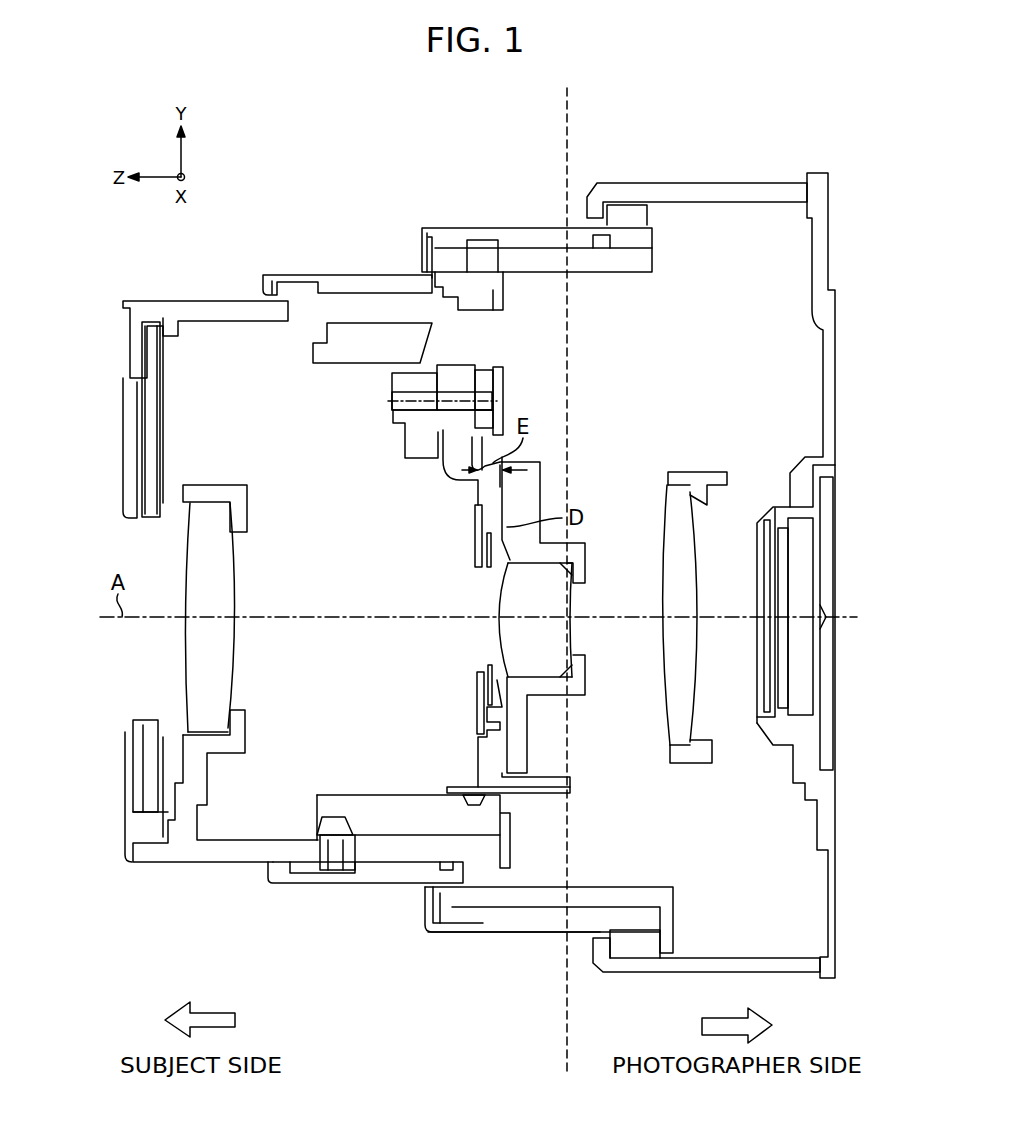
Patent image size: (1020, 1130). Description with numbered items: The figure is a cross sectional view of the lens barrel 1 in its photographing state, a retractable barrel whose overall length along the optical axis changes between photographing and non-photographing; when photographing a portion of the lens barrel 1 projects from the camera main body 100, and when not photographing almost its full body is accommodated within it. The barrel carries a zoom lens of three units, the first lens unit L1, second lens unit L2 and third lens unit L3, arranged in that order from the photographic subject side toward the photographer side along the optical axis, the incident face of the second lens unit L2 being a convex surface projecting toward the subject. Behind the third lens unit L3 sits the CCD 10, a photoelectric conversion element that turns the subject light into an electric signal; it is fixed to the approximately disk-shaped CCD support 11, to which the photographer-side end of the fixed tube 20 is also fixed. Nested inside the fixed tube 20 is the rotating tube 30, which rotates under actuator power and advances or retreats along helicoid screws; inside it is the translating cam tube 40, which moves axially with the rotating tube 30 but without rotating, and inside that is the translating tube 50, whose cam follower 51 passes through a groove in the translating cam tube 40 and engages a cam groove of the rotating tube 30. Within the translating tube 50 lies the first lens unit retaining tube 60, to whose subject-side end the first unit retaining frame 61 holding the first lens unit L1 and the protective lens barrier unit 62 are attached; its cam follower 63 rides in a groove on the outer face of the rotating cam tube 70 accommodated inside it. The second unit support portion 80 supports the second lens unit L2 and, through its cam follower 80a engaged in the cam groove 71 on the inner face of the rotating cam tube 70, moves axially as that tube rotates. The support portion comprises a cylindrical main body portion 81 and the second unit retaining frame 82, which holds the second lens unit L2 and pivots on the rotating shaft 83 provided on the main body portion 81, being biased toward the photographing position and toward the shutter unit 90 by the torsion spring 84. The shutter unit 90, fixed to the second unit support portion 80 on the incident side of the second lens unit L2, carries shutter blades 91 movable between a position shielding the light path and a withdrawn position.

The lens barrel 1 is at (638, 153).
The CCD 10 is at (805, 548).
The CCD support 11 is at (830, 385).
The fixed tube 20 is at (783, 182).
The rotating tube 30 is at (508, 236).
The translating cam tube 40 is at (543, 258).
The translating tube 50 is at (370, 275).
The cam follower 51 is at (480, 238).
The first lens unit retaining tube 60 is at (222, 300).
The first unit retaining frame 61 is at (207, 785).
The lens barrier unit 62 is at (123, 405).
The cam follower 63 is at (332, 818).
The rotating cam tube 70 is at (387, 837).
The cam groove 71 is at (455, 803).
The second unit support portion 80 is at (550, 797).
The cam follower 80a is at (492, 808).
The main body portion 81 is at (403, 443).
The second unit retaining frame 82 is at (540, 480).
The rotating shaft 83 is at (417, 412).
The torsion spring 84 is at (483, 370).
The shutter unit 90 is at (475, 518).
The shutter blades 91 is at (485, 573).
The camera main body 100 is at (563, 130).
The first lens unit L1 is at (185, 675).
The second lens unit L2 is at (495, 638).
The third lens unit L3 is at (667, 712).